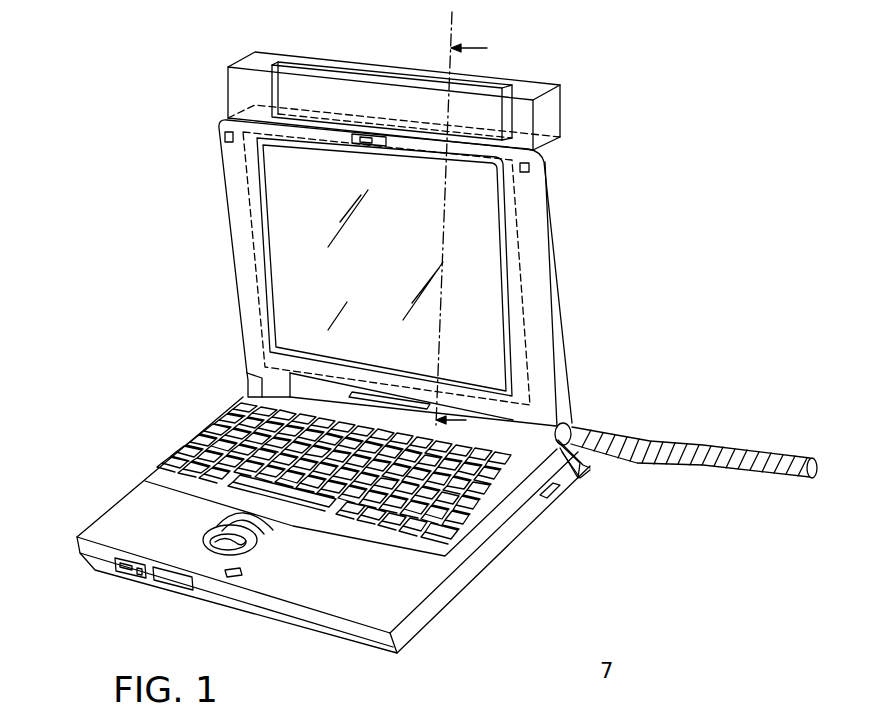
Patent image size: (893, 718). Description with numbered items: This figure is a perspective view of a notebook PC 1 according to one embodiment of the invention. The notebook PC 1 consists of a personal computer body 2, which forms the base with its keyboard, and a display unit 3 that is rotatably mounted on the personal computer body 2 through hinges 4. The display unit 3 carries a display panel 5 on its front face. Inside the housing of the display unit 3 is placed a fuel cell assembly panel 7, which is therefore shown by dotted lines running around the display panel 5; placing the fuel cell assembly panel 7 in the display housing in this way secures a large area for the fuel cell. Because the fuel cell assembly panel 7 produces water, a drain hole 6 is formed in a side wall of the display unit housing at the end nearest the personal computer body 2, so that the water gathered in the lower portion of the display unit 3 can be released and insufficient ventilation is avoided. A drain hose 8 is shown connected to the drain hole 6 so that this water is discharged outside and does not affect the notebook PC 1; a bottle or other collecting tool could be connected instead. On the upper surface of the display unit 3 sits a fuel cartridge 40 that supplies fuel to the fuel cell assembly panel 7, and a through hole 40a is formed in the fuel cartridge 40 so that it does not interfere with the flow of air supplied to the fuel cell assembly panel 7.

The notebook PC 1 is at (106, 436).
The personal computer body 2 is at (405, 602).
The display unit 3 is at (233, 240).
The hinges 4 is at (270, 388).
The display panel 5 is at (487, 285).
The drain hole 6 is at (570, 426).
The fuel cell assembly panel 7 is at (517, 217).
The drain hose 8 is at (703, 443).
The fuel cartridge 40 is at (408, 82).
The through hole 40a is at (338, 68).